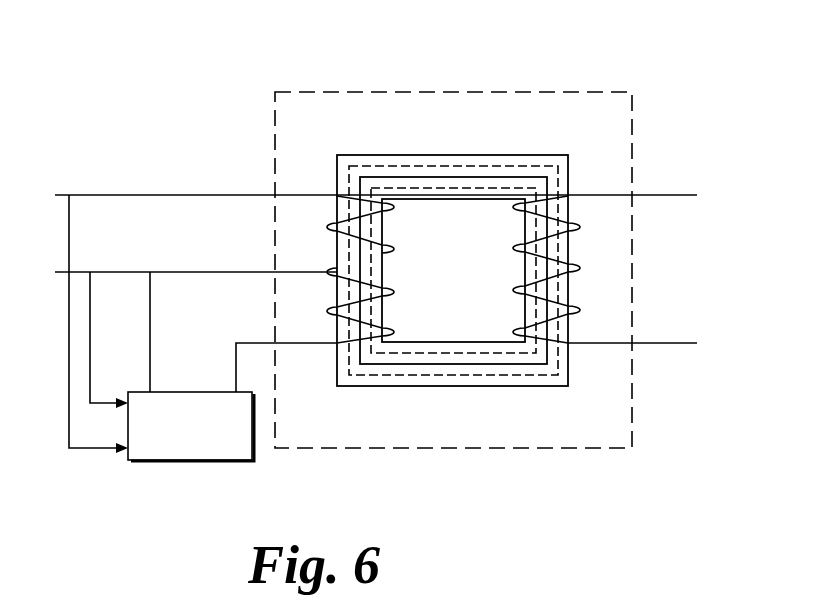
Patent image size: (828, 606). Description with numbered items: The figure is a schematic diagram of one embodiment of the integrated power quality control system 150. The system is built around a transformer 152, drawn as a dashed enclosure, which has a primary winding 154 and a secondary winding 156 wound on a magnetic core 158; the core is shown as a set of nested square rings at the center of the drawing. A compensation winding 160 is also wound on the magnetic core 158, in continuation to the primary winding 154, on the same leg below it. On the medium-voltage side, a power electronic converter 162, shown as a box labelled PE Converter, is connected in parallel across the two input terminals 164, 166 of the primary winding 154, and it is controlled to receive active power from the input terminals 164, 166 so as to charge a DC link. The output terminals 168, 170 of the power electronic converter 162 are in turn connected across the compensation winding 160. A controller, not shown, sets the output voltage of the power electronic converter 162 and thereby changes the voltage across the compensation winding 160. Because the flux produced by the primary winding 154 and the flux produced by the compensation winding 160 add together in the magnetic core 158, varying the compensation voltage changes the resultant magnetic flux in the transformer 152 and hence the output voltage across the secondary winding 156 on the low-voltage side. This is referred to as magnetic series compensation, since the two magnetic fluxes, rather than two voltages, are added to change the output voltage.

The integrated power quality control system 150 is at (680, 39).
The transformer 152 is at (306, 92).
The primary winding 154 is at (396, 251).
The secondary winding 156 is at (513, 291).
The magnetic core 158 is at (406, 160).
The compensation winding 160 is at (401, 283).
The power electronic converter 162 is at (128, 462).
The input terminal 164 is at (224, 194).
The input terminal 166 is at (224, 271).
The output terminal 168 is at (150, 330).
The output terminal 170 is at (236, 343).